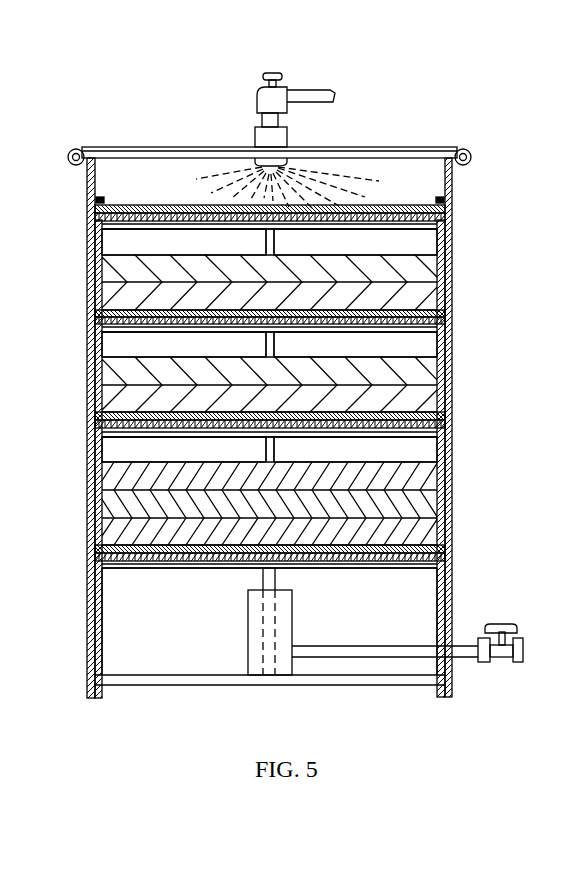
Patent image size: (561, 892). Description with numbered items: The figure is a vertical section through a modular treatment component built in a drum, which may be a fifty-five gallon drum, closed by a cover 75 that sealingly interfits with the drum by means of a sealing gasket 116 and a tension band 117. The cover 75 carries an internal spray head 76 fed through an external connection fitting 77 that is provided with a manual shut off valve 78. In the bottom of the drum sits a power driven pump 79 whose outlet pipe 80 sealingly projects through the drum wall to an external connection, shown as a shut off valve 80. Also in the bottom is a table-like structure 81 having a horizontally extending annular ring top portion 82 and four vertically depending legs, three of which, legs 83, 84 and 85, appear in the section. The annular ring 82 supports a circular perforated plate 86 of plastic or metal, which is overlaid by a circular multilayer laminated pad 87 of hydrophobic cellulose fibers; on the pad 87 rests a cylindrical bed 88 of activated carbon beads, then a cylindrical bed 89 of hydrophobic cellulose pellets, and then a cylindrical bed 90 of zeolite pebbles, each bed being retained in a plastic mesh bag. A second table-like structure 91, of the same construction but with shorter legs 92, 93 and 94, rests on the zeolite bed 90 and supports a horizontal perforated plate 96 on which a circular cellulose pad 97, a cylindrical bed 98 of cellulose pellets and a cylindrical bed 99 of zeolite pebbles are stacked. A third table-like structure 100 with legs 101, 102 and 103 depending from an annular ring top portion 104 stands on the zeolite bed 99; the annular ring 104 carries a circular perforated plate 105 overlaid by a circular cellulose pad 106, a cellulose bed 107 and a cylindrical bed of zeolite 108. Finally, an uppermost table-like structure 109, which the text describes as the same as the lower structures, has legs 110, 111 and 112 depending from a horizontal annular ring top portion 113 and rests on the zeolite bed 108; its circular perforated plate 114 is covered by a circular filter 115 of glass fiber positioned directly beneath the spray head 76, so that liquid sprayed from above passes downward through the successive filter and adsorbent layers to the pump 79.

The cover 75 is at (372, 147).
The internal spray head 76 is at (255, 160).
The external connection fitting 77 is at (258, 94).
The manual shut off valve 78 is at (276, 72).
The power driven pump 79 is at (293, 614).
The outlet pipe 80 is at (400, 646).
The table-like structure 81 is at (224, 574).
The annular ring top portion 82 is at (390, 570).
The leg 83 is at (102, 628).
The leg 84 is at (263, 585).
The leg 85 is at (437, 612).
The circular perforated plate 86 is at (452, 564).
The multilayer laminated pad 87 is at (452, 550).
The bed of activated carbon beads 88 is at (452, 520).
The bed of hydrophobic cellulose pellets 89 is at (452, 495).
The bed of zeolite pebbles 90 is at (452, 470).
The second table-like structure 91 is at (363, 440).
The leg 92 is at (102, 449).
The leg 93 is at (265, 449).
The leg 94 is at (437, 446).
The horizontal perforated plate 96 is at (452, 432).
The circular cellulose pad 97 is at (452, 415).
The bed of cellulose pellets 98 is at (452, 395).
The bed of zeolite pebbles 99 is at (452, 370).
The table-like structure 100 is at (368, 336).
The leg 101 is at (88, 343).
The leg 102 is at (265, 346).
The leg 103 is at (437, 340).
The annular ring top portion 104 is at (202, 335).
The circular perforated plate 105 is at (452, 327).
The circular cellulose pad 106 is at (452, 316).
The cellulose bed 107 is at (452, 293).
The bed of zeolite 108 is at (452, 262).
The chamber top plate 109 is at (365, 233).
The leg 110 is at (88, 238).
The leg 111 is at (265, 243).
The leg 112 is at (437, 238).
The annular ring top portion 113 is at (198, 232).
The circular perforated plate 114 is at (452, 217).
The circular filter 115 is at (385, 205).
The sealing gasket 116 is at (80, 150).
The tension band 117 is at (472, 154).